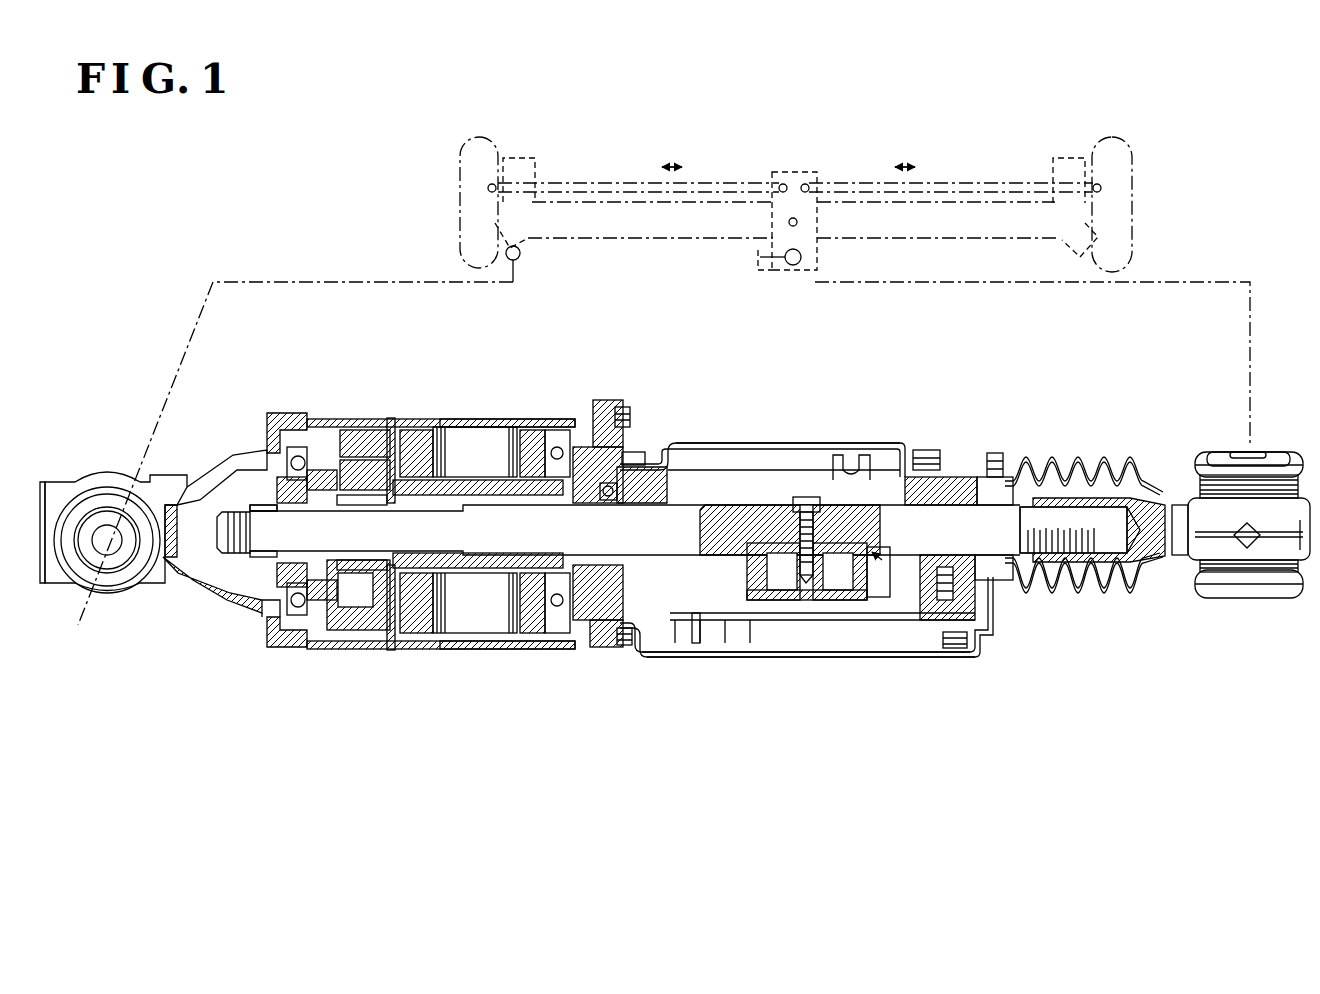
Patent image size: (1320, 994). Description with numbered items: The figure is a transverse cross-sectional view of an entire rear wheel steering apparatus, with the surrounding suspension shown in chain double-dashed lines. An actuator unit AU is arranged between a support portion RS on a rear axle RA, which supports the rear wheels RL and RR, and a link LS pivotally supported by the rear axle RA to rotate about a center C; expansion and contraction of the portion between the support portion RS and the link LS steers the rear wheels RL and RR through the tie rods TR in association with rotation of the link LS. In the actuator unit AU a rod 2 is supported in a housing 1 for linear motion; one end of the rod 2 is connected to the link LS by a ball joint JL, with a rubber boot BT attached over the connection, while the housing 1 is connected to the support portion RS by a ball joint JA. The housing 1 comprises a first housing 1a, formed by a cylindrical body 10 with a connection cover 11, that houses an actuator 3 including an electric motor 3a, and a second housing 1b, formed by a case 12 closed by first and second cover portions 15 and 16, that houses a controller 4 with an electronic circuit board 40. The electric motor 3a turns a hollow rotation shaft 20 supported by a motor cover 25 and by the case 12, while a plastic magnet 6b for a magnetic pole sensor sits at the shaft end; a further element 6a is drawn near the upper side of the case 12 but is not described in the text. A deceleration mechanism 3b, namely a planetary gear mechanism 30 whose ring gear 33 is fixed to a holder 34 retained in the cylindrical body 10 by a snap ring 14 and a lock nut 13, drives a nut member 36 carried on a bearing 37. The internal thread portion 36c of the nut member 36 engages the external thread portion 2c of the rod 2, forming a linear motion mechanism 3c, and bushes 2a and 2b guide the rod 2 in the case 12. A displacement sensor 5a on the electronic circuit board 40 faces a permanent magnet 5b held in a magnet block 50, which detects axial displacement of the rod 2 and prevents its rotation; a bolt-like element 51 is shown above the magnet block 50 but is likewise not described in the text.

The housing 1 is at (607, 662).
The first housing 1a is at (518, 655).
The second housing 1b is at (737, 660).
The rod 2 is at (493, 542).
The bush 2a is at (682, 503).
The bush 2b is at (950, 480).
The external thread portion 2c is at (263, 548).
The actuator 3 is at (314, 660).
The electric motor 3a is at (504, 413).
The deceleration mechanism 3b is at (358, 410).
The linear motion mechanism 3c is at (257, 584).
The controller 4 is at (805, 624).
The displacement sensor 5a is at (792, 602).
The permanent magnet 5b is at (838, 602).
The upper flange 6a is at (578, 440).
The plastic magnet 6b is at (586, 634).
The cylindrical body 10 is at (460, 425).
The connection cover 11 is at (207, 585).
The case 12 is at (612, 452).
The lock nut 13 is at (292, 448).
The snap ring 14 is at (392, 430).
The first cover portion 15 is at (853, 445).
The second cover portion 16 is at (940, 658).
The hollow rotation shaft 20 is at (445, 600).
The motor cover 25 is at (401, 640).
The planetary gear mechanism 30 is at (367, 602).
The ring gear 33 is at (352, 460).
The holder 34 is at (335, 440).
The nut member 36 is at (255, 478).
The internal thread portion 36c is at (273, 497).
The bearing 37 is at (275, 462).
The electronic circuit board 40 is at (870, 602).
The magnet block 50 is at (893, 600).
The bolt 51 is at (807, 497).
The actuator unit AU is at (628, 383).
The rubber boot BT is at (1063, 594).
The ball joint JA is at (110, 594).
The ball joint JL is at (1235, 588).
The rear wheel RL is at (460, 205).
The rear wheel RR is at (1125, 220).
The tie rod TR is at (597, 183).
The rear axle RA is at (603, 238).
The support portion RS is at (520, 256).
The link LS is at (770, 250).
The center C is at (797, 226).